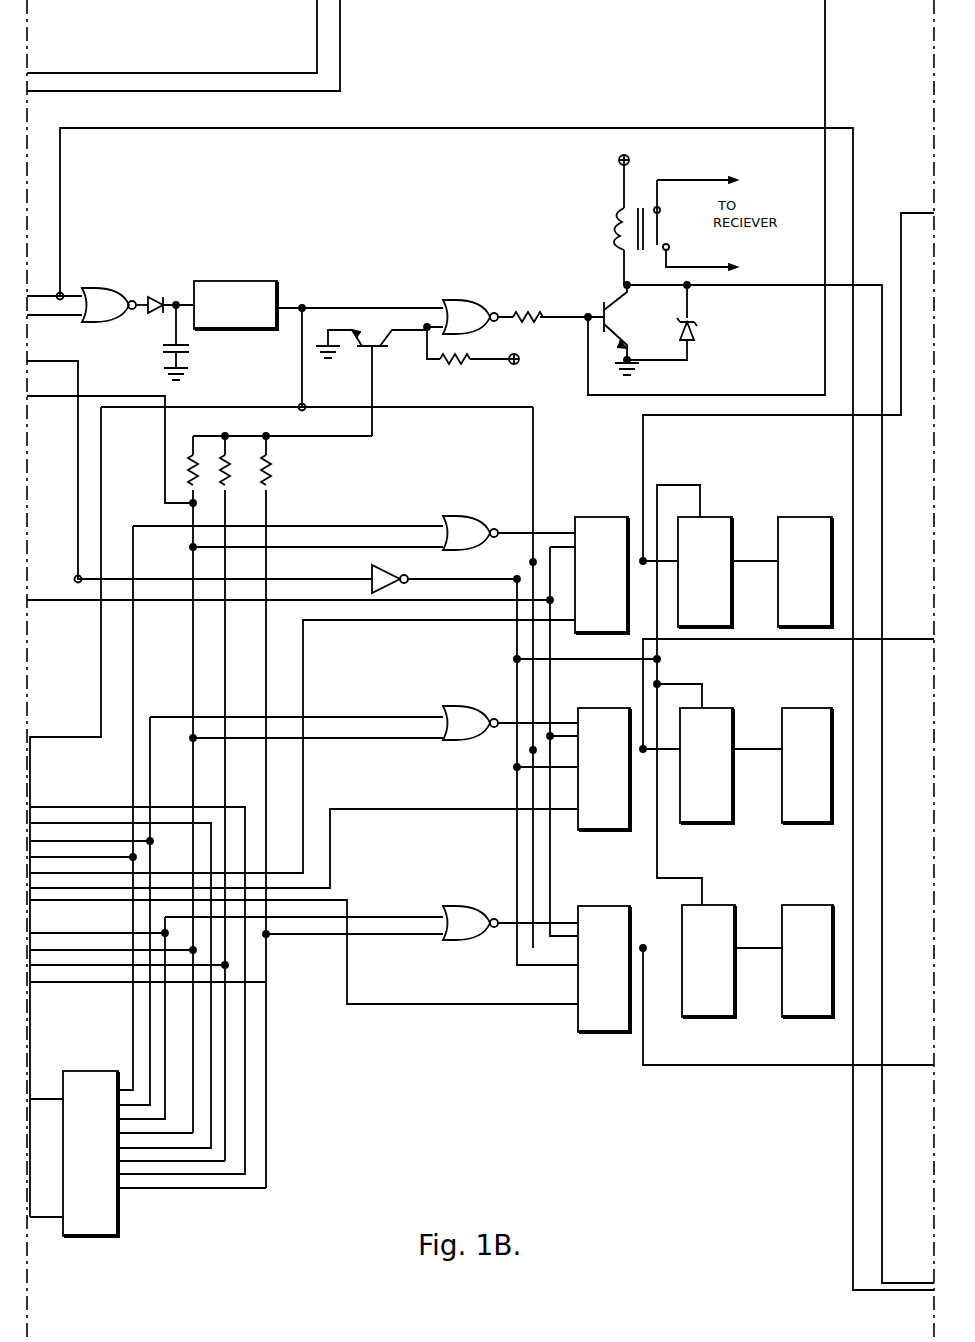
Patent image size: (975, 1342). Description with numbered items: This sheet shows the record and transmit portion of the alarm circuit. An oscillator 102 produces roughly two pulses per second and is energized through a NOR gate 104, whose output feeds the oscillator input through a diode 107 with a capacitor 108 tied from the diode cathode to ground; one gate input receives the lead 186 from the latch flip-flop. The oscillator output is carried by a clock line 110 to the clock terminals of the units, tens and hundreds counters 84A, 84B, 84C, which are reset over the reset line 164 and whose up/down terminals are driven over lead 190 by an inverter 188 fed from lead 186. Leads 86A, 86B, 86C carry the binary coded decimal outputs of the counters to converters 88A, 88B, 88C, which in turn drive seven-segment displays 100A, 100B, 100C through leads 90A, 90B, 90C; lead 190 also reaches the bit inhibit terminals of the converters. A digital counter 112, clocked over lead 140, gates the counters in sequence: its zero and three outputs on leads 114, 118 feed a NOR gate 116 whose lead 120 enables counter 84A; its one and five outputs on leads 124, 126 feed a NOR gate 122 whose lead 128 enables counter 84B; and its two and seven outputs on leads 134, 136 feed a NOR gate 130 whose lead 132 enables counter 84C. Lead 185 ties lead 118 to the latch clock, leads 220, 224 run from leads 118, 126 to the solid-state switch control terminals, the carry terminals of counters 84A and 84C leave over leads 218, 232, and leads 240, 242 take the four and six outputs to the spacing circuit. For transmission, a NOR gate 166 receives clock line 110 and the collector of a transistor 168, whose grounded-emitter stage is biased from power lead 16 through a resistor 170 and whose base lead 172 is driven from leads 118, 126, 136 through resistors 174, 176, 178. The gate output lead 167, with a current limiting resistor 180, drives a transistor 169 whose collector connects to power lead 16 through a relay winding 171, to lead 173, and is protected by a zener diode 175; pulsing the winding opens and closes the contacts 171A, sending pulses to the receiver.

The power lead 16 is at (437, 3).
The lead 186 is at (893, 1260).
The lead 167 is at (820, 42).
The lead 86A is at (901, 213).
The relay winding 171 is at (614, 224).
The normally open contacts 171A is at (664, 228).
The lead 173 is at (771, 284).
The NOR gate 104 is at (95, 282).
The diode 107 is at (152, 295).
The oscillator 102 is at (255, 254).
The clock line 110 is at (372, 306).
The capacitor 108 is at (190, 350).
The lead 185 is at (116, 396).
The NOR gate 166 is at (457, 300).
The current limiting resistor 180 is at (527, 304).
The transistor 168 is at (357, 352).
The resistor 170 is at (442, 364).
The transistor 169 is at (618, 314).
The zener diode 175 is at (697, 328).
The resistor 174 is at (186, 460).
The resistor 176 is at (242, 476).
The resistor 178 is at (272, 468).
The lead 172 is at (356, 452).
The lead 114 is at (336, 529).
The lead 118 is at (275, 548).
The NOR gate 116 is at (449, 517).
The lead 120 is at (504, 542).
The inverter 188 is at (370, 565).
The lead 190 is at (505, 584).
The reset line 164 is at (48, 608).
The lead 218 is at (340, 632).
The lead 124 is at (342, 717).
The lead 126 is at (232, 662).
The NOR gate 122 is at (454, 708).
The lead 128 is at (500, 730).
The lead 136 is at (260, 692).
The lead 134 is at (377, 911).
The NOR gate 130 is at (459, 908).
The lead 132 is at (500, 930).
The lead 232 is at (384, 1003).
The lead 220 is at (95, 920).
The lead 224 is at (60, 990).
The lead 240 is at (213, 1085).
The lead 242 is at (247, 1146).
The counter 84A is at (575, 517).
The converter 88A is at (717, 515).
The lead 90A is at (754, 559).
The seven-segment display 100A is at (820, 495).
The lead 86B is at (912, 638).
The counter 84B is at (608, 831).
The converter 88B is at (742, 822).
The lead 90B is at (755, 747).
The seven-segment display 100B is at (830, 826).
The lead 86C is at (912, 1064).
The counter 84C is at (610, 1034).
The converter 88C is at (752, 1016).
The lead 90C is at (755, 947).
The seven-segment display 100C is at (823, 1018).
The digital counter 112 is at (66, 1239).
The lead 140 is at (50, 1221).